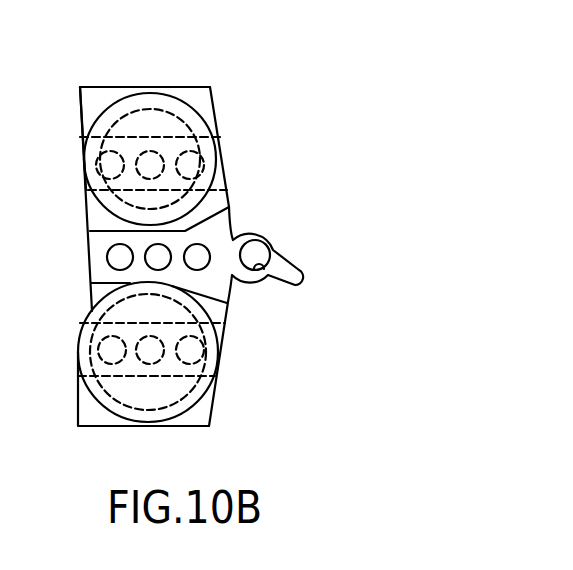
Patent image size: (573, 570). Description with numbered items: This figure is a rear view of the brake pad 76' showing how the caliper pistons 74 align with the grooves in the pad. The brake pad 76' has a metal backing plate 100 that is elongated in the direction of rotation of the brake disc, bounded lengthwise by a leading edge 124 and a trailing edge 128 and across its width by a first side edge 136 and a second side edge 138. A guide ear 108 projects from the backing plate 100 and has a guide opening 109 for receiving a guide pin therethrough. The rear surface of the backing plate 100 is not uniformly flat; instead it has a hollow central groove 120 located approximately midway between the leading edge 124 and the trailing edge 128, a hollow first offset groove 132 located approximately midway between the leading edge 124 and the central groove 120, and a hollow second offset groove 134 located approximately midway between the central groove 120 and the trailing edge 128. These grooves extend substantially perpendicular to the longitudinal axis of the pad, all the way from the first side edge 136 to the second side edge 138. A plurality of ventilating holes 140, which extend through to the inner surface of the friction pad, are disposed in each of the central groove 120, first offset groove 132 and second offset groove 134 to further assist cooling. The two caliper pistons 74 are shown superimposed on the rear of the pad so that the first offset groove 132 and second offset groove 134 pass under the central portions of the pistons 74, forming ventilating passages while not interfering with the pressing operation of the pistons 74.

The brake pad 76' is at (107, 168).
The caliper pistons 74 is at (57, 405).
The metal backing plate 100 is at (80, 102).
The first side edge 136 is at (80, 122).
The trailing edge 128 is at (164, 86).
The second side edge 138 is at (205, 107).
The second offset groove 134 is at (215, 145).
The ventilating holes 140 is at (192, 165).
The central groove 120 is at (100, 241).
The guide ear 108 is at (270, 235).
The guide opening 109 is at (260, 271).
The first offset groove 132 is at (225, 326).
The leading edge 124 is at (148, 427).